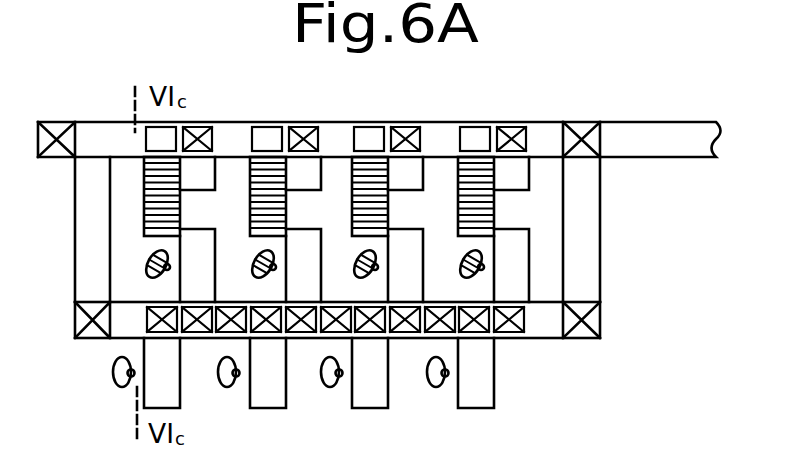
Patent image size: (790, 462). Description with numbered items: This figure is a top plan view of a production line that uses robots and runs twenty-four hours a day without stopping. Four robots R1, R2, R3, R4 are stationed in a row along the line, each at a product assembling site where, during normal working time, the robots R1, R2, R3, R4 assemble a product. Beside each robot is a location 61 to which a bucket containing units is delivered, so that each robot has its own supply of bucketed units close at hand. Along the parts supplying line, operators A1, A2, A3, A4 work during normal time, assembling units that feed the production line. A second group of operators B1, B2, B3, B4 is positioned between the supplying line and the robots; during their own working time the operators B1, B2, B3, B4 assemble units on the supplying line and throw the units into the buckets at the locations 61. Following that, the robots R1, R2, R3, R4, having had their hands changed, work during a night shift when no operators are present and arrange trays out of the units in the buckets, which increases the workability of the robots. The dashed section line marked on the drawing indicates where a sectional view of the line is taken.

The location 61 is at (157, 187).
The robot R1 is at (198, 176).
The robot R2 is at (304, 176).
The robot R3 is at (406, 176).
The robot R4 is at (512, 176).
The operator B1 is at (150, 273).
The operator B2 is at (256, 273).
The operator B3 is at (358, 273).
The operator B4 is at (464, 273).
The operator A1 is at (113, 382).
The operator A2 is at (220, 382).
The operator A3 is at (323, 382).
The operator A4 is at (429, 382).